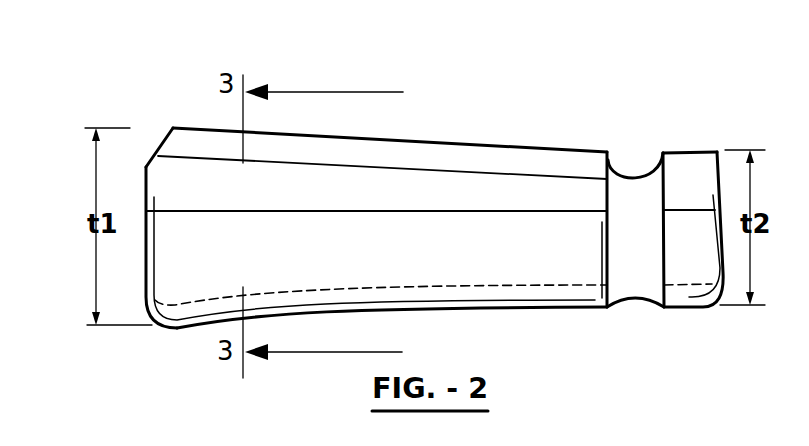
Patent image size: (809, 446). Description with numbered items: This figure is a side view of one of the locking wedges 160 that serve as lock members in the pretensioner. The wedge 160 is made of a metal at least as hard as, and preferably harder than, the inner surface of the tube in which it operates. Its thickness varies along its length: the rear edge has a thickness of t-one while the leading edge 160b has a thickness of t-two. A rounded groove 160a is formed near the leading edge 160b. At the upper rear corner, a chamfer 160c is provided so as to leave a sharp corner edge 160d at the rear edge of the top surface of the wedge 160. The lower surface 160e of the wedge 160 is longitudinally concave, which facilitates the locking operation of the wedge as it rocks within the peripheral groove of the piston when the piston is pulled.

The wedge 160 is at (381, 258).
The rounded groove 160a is at (637, 188).
The leading edge 160b is at (717, 152).
The chamfer 160c is at (156, 149).
The sharp corner edge 160d is at (173, 128).
The lower surface 160e is at (387, 308).